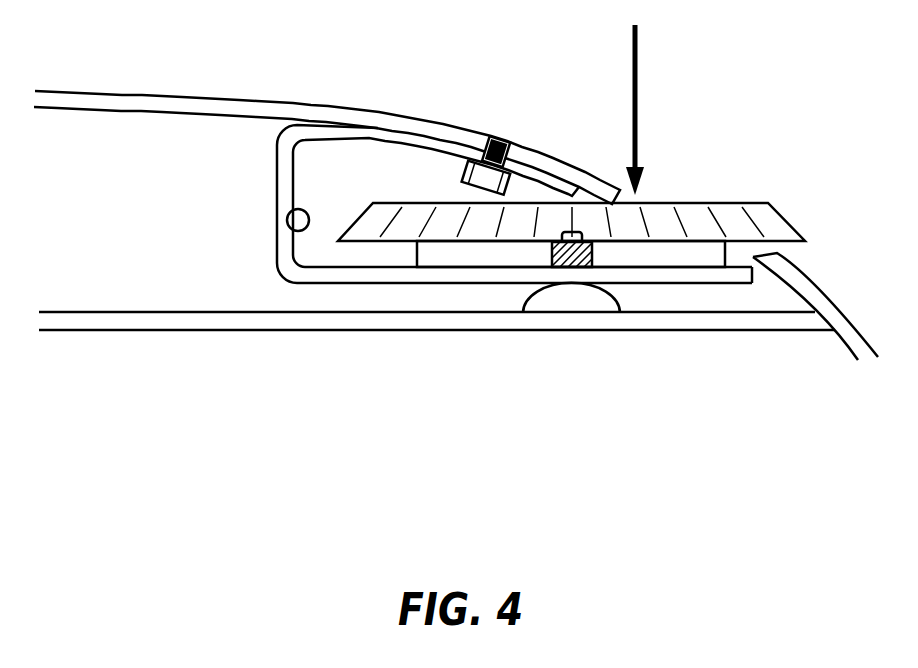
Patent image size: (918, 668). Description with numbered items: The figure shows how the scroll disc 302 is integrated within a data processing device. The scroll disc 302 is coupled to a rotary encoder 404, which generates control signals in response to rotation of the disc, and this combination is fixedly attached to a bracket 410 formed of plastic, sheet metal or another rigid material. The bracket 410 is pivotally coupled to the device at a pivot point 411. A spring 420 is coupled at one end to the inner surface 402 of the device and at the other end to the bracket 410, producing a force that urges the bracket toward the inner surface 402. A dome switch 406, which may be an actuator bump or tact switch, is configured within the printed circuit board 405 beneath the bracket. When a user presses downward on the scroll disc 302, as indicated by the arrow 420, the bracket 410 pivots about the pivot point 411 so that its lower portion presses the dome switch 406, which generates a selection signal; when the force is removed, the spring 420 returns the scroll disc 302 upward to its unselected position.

The scroll disc 302 is at (720, 210).
The inner surface 402 is at (88, 108).
The rotary encoder 404 is at (480, 250).
The printed circuit board 405 is at (177, 322).
The dome switch 406 is at (585, 297).
The bracket 410 is at (280, 170).
The pivot point 411 is at (277, 220).
The spring 420 is at (513, 137).